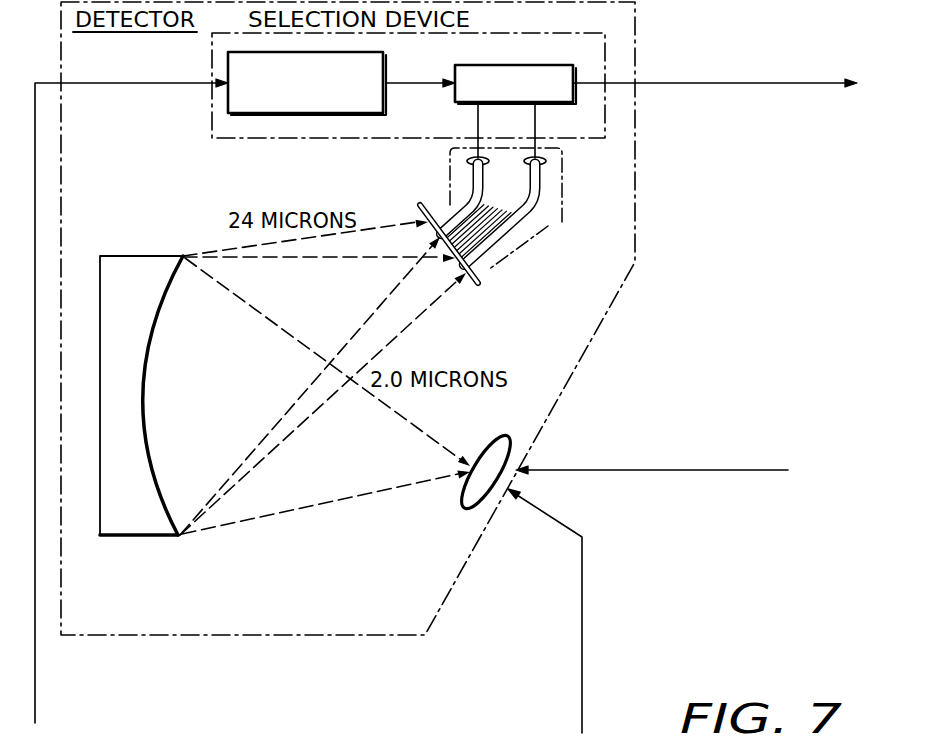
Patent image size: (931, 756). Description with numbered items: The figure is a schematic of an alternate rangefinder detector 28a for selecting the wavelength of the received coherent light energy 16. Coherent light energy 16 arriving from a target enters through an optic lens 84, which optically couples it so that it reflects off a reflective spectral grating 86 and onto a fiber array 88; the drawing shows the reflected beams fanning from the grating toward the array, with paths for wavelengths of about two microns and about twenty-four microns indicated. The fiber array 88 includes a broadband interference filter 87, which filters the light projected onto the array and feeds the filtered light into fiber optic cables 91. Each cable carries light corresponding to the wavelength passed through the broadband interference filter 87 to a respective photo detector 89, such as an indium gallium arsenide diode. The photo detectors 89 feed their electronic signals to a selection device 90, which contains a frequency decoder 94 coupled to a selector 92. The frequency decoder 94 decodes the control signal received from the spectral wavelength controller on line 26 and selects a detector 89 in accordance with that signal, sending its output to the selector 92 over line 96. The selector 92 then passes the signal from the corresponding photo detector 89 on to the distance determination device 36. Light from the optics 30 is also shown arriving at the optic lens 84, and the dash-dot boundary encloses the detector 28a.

The coherent light energy 16 is at (603, 472).
The line 26 is at (46, 58).
The detector 28a is at (458, 572).
The optics 30 is at (587, 612).
The distance determination device 36 is at (715, 108).
The optic lens 84 is at (484, 440).
The reflective spectral grating 86 is at (143, 391).
The broadband interference filter 87 is at (420, 206).
The fiber array 88 is at (548, 227).
The photo detectors 89 is at (547, 161).
The selection device 90 is at (553, 35).
The fiber optic cables 91 is at (547, 200).
The selector 92 is at (553, 63).
The frequency decoder 94 is at (388, 75).
The line 96 is at (420, 85).